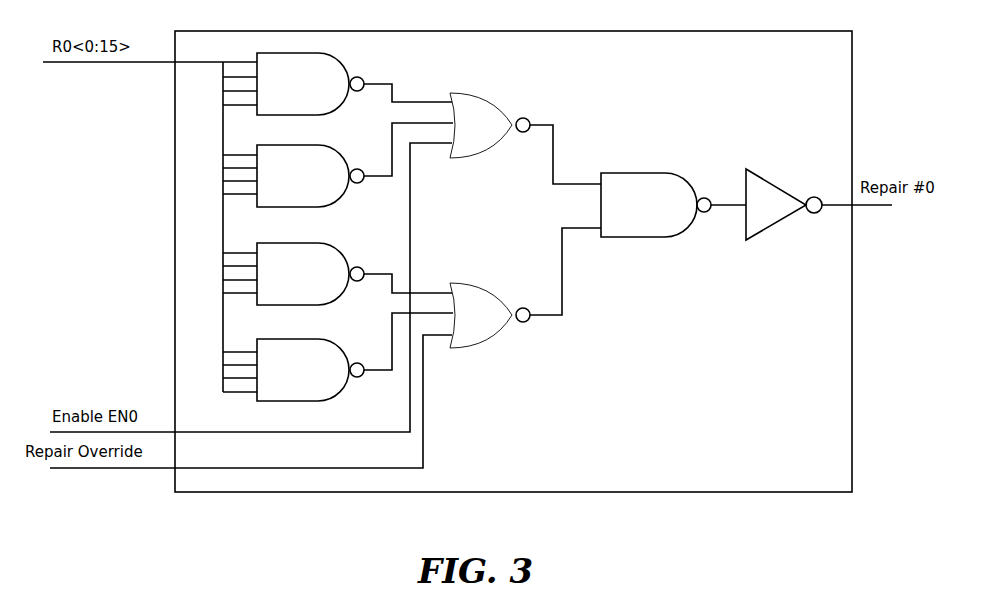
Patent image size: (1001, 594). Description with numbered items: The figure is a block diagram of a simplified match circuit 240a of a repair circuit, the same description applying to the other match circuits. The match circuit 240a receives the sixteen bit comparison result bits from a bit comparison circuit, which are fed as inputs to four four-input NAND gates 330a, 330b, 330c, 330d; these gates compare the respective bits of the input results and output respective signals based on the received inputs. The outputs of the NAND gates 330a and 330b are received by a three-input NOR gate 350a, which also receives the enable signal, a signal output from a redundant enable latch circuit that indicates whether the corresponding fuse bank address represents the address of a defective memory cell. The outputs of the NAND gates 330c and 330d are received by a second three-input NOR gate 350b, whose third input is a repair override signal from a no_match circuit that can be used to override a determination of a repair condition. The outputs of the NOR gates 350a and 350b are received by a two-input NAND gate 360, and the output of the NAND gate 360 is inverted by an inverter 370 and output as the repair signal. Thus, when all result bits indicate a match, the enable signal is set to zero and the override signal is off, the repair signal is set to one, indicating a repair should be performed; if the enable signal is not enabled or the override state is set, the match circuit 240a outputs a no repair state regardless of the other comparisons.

The match circuit 240a is at (822, 455).
The 4-input NAND gate 330a is at (354, 84).
The 4-input NAND gate 330b is at (355, 165).
The 4-input NAND gate 330c is at (354, 274).
The 4-input NAND gate 330d is at (355, 357).
The 3-input NOR gate 350a is at (525, 138).
The 3-input NOR gate 350b is at (525, 288).
The 2-input NAND gate 360 is at (673, 205).
The inverter 370 is at (819, 204).